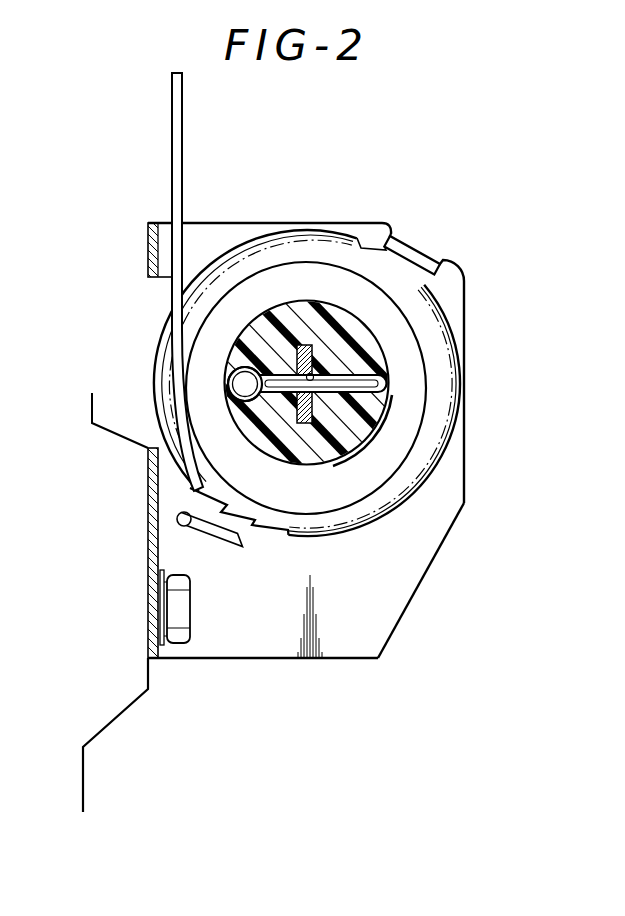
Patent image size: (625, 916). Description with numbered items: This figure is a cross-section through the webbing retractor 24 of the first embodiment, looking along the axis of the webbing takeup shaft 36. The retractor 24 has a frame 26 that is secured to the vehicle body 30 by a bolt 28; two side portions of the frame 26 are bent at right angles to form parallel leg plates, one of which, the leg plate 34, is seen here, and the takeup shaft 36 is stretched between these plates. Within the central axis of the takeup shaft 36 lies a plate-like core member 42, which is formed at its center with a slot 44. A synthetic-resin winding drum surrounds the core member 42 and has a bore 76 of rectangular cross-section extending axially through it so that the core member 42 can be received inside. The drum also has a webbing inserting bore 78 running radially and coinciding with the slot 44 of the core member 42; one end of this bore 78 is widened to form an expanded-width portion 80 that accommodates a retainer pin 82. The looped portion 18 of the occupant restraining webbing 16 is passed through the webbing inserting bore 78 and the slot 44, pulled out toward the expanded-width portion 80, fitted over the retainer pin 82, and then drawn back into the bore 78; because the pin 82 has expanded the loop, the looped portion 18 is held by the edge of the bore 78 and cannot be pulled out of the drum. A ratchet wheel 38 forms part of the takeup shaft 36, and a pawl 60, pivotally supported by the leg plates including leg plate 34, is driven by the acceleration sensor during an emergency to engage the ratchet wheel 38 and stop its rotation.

The occupant restraining webbing 16 is at (183, 140).
The looped portion 18 is at (232, 367).
The webbing retractor 24 is at (361, 216).
The frame 26 is at (158, 546).
The bolt 28 is at (180, 608).
The vehicle body 30 is at (140, 678).
The leg plate 34 is at (418, 547).
The webbing takeup shaft 36 is at (393, 358).
The ratchet wheel 38 is at (453, 441).
The plate-like core member 42 is at (311, 357).
The slot 44 is at (316, 372).
The pawl 60 is at (237, 545).
The bore 76 is at (308, 425).
The webbing inserting bore 78 is at (392, 383).
The expanded-width portion 80 is at (231, 397).
The retainer pin 82 is at (242, 379).